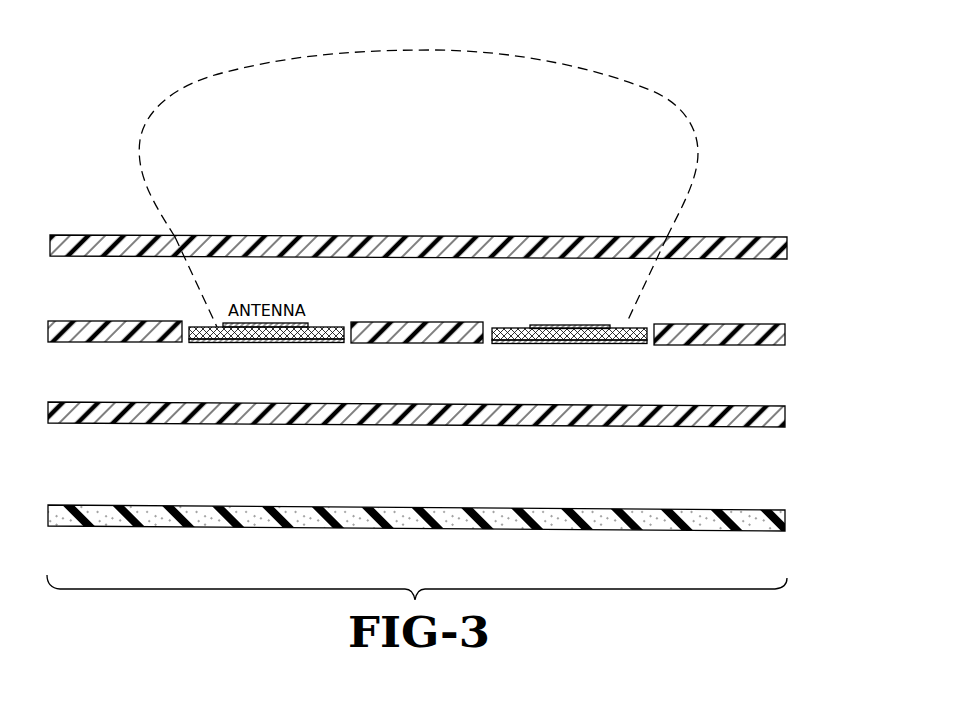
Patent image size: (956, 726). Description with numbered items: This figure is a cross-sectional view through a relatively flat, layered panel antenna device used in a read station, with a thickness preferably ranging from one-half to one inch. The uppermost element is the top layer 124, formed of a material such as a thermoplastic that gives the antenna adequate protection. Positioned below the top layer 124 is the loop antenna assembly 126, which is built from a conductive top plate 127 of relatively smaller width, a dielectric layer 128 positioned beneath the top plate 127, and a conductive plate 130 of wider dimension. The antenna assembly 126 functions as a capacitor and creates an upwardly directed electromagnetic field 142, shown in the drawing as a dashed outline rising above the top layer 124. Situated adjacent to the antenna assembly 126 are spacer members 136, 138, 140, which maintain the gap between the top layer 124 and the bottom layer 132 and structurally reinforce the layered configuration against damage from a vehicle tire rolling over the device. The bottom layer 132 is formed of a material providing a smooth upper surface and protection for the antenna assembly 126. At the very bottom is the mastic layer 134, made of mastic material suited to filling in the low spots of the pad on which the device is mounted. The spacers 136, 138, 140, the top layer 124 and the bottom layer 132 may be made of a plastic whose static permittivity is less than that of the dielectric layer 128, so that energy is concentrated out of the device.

The top layer 124 is at (578, 239).
The loop antenna assembly 126 is at (636, 331).
The conductive top plate 127 is at (530, 327).
The dielectric layer 128 is at (605, 344).
The conductive plate 130 is at (545, 344).
The bottom layer 132 is at (715, 418).
The mastic layer 134 is at (697, 522).
The spacer member 136 is at (130, 334).
The spacer member 138 is at (372, 336).
The spacer member 140 is at (756, 337).
The electromagnetic field 142 is at (216, 72).